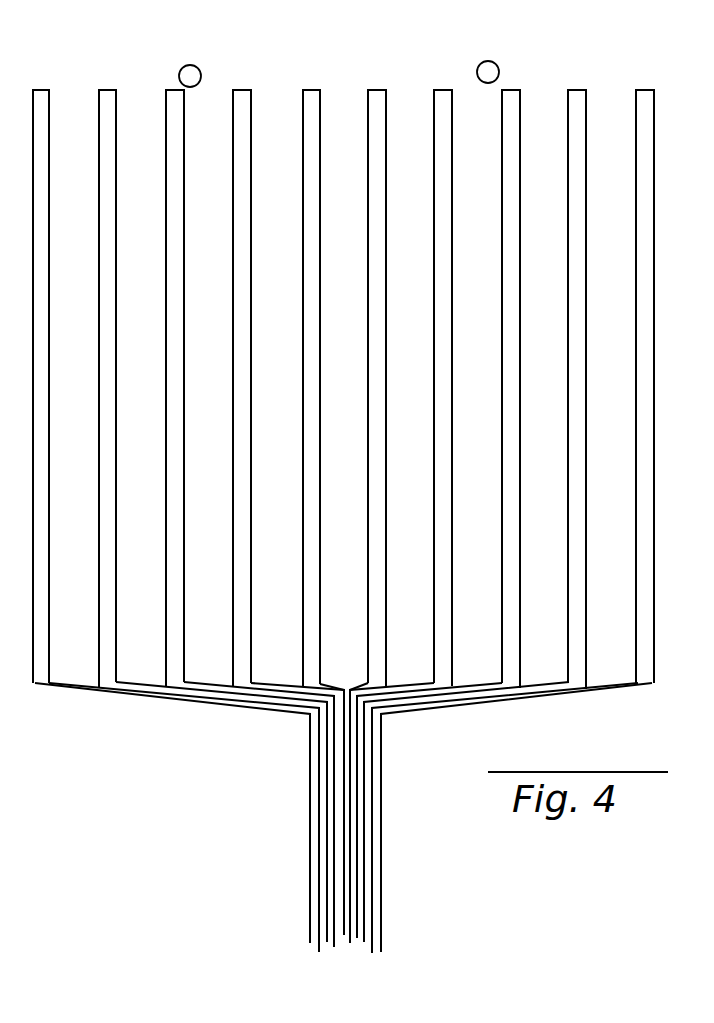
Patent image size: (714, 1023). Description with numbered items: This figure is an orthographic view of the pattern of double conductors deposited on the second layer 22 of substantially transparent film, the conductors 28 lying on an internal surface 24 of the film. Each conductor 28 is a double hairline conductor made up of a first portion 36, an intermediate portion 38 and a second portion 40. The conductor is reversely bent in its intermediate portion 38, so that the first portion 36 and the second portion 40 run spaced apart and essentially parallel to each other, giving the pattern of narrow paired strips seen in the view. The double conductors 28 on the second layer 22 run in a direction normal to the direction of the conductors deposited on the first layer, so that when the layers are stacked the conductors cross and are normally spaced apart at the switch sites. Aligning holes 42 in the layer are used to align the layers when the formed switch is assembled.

The second layer of film 22 is at (203, 716).
The internal surface 24 is at (84, 640).
The conductors 28 is at (310, 90).
The first portion 36 is at (434, 208).
The intermediate portion 38 is at (442, 89).
The second portion 40 is at (452, 212).
The aligning holes 42 is at (182, 67).